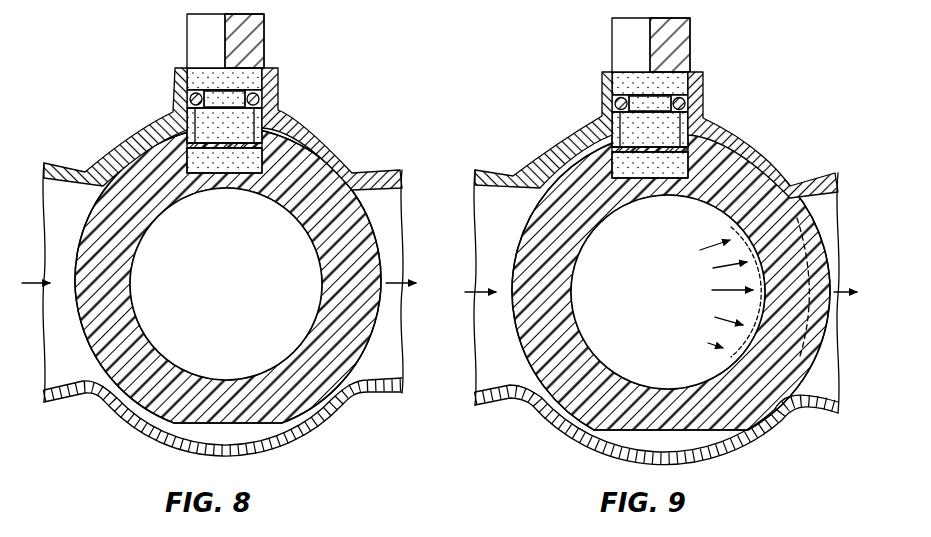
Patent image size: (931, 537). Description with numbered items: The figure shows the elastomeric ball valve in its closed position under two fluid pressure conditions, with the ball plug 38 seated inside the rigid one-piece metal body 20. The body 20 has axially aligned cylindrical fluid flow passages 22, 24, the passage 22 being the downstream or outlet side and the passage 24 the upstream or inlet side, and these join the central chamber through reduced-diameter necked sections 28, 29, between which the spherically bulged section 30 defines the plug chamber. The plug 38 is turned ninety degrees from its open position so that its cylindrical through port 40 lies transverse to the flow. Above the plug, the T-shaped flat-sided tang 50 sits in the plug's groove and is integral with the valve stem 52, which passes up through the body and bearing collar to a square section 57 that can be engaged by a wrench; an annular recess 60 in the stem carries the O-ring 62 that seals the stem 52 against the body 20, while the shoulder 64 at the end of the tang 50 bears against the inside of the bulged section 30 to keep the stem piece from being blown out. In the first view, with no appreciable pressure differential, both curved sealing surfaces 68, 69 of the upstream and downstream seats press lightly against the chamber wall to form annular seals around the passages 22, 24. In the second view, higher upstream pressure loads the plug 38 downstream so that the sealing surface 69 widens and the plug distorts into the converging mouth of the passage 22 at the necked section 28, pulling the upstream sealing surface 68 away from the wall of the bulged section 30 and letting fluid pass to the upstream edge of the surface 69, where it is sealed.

In FIG. 8, the body 20 is at (400, 160).
In FIG. 9, the body 20 is at (820, 166).
In FIG. 8, the fluid flow passage 22 is at (406, 388).
In FIG. 9, the fluid flow passage 22 is at (802, 392).
In FIG. 8, the fluid flow passage 24 is at (57, 381).
In FIG. 9, the fluid flow passage 24 is at (478, 379).
In FIG. 8, the necked section 28 is at (361, 396).
In FIG. 9, the necked section 28 is at (789, 406).
In FIG. 8, the necked section 29 is at (86, 403).
In FIG. 9, the necked section 29 is at (514, 404).
In FIG. 8, the spherically bulged section 30 is at (146, 131).
In FIG. 9, the spherically bulged section 30 is at (571, 139).
In FIG. 8, the ball plug 38 is at (403, 227).
In FIG. 9, the ball plug 38 is at (442, 225).
In FIG. 8, the through port 40 is at (150, 348).
In FIG. 9, the through port 40 is at (590, 350).
In FIG. 8, the tang 50 is at (247, 160).
In FIG. 9, the tang 50 is at (672, 165).
In FIG. 8, the valve stem 52 is at (242, 122).
In FIG. 9, the valve stem 52 is at (668, 127).
In FIG. 8, the square section 57 is at (261, 47).
In FIG. 9, the square section 57 is at (622, 44).
In FIG. 8, the annular recess 60 is at (275, 86).
In FIG. 9, the annular recess 60 is at (705, 100).
In FIG. 8, the O-ring 62 is at (192, 98).
In FIG. 9, the O-ring 62 is at (617, 99).
In FIG. 8, the shoulder 64 is at (243, 144).
In FIG. 9, the shoulder 64 is at (668, 150).
In FIG. 8, the sealing surface 68 is at (112, 161).
In FIG. 9, the sealing surface 68 is at (548, 168).
In FIG. 8, the sealing surface 69 is at (347, 168).
In FIG. 9, the sealing surface 69 is at (770, 180).